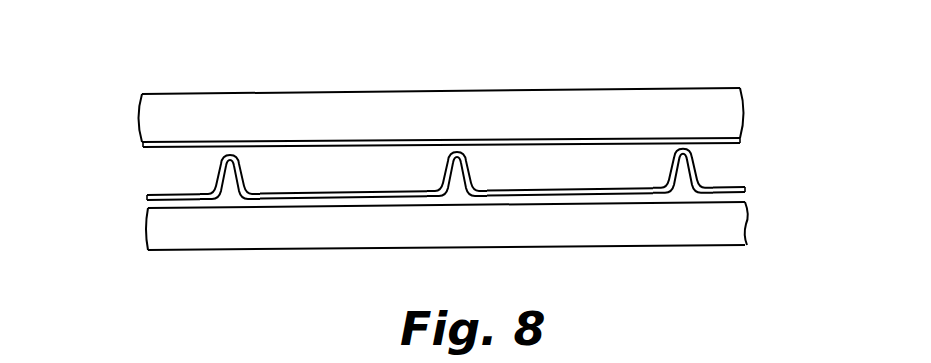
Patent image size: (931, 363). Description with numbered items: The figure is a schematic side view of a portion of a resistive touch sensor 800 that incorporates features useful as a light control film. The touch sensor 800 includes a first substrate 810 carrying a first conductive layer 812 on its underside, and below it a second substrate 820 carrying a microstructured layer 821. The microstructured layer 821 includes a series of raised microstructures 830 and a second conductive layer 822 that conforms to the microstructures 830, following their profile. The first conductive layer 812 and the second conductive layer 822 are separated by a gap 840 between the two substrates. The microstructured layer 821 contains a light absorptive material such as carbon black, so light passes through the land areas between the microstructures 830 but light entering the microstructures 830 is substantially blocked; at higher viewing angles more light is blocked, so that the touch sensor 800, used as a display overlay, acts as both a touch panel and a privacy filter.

The touch sensor 800 is at (704, 72).
The first substrate 810 is at (537, 105).
The first conductive layer 812 is at (738, 139).
The second substrate 820 is at (447, 252).
The microstructured layer 821 is at (582, 200).
The second conductive layer 822 is at (488, 132).
The microstructures 830 is at (457, 167).
The gap 840 is at (353, 157).